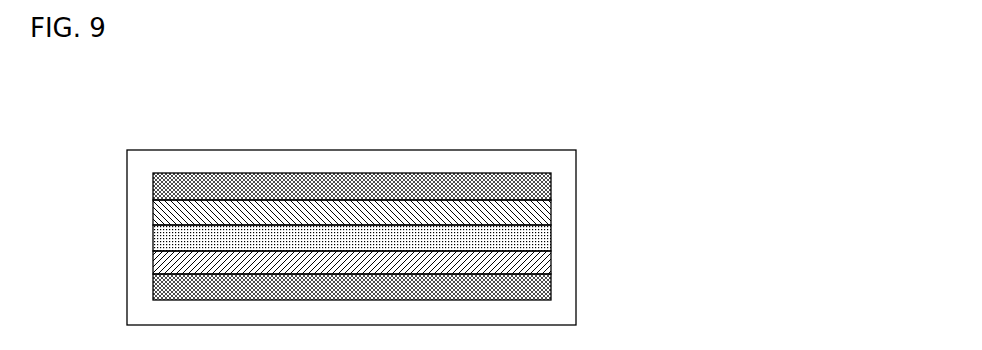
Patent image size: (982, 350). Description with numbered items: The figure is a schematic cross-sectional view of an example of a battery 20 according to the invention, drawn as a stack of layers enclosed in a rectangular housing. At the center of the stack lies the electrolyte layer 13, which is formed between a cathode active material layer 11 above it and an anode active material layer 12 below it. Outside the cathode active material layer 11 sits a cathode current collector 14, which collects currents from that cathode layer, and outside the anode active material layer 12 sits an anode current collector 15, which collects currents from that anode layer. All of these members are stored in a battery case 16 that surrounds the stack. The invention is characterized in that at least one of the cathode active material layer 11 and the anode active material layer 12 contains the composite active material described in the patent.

The battery 20 is at (490, 122).
The battery case 16 is at (565, 163).
The cathode current collector 14 is at (541, 187).
The cathode active material layer 11 is at (542, 211).
The electrolyte layer 13 is at (541, 237).
The anode active material layer 12 is at (541, 262).
The anode current collector 15 is at (541, 285).